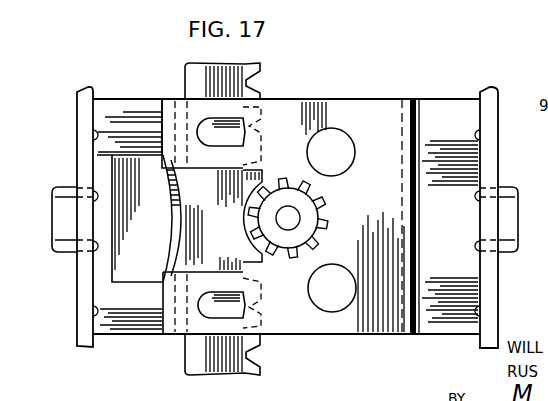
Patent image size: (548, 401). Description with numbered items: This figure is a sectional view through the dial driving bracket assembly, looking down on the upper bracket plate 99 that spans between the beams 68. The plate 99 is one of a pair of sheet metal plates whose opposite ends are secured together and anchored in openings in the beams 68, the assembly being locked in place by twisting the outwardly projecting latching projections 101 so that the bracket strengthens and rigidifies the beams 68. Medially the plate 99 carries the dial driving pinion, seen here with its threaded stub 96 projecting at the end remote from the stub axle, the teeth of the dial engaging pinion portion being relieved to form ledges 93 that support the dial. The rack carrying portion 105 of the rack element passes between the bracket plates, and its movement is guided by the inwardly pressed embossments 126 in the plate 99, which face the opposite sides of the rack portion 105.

The beam 68 is at (82, 289).
The ledge 93 is at (542, 65).
The threaded stub 96 is at (291, 216).
The upper bracket plate 99 is at (364, 112).
The twisted latching projection 101 is at (50, 198).
The rack carrying portion 105 is at (192, 72).
The embossment 126 is at (237, 125).